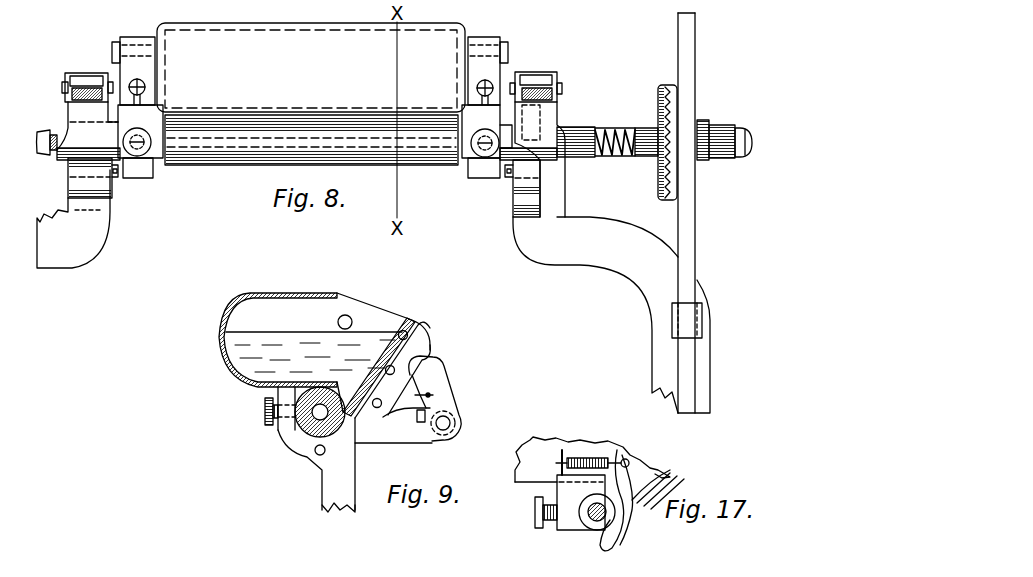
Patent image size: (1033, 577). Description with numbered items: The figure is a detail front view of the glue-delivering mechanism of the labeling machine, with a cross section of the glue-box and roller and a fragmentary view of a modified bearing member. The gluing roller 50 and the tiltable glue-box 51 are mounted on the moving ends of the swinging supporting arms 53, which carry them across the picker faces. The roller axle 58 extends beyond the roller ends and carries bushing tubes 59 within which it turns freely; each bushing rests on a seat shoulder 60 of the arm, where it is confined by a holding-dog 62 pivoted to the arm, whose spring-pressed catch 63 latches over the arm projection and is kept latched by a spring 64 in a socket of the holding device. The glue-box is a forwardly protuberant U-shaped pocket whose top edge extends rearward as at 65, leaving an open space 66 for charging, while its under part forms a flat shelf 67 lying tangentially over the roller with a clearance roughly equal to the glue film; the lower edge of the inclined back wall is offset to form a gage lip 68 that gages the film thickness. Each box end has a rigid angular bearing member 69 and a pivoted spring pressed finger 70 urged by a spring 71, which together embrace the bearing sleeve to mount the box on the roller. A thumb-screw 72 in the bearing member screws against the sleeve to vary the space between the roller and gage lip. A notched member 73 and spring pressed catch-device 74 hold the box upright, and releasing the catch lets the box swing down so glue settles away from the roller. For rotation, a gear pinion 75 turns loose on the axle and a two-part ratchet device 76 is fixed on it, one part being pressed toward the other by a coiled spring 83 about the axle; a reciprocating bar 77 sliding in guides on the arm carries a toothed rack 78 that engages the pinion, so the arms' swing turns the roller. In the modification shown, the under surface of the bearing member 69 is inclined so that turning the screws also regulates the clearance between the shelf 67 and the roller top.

In FIG. 8, the gluing roller 50 is at (262, 133).
In FIG. 9, the gluing roller 50 is at (307, 427).
In FIG. 8, the glue-box 51 is at (311, 67).
In FIG. 9, the glue-box 51 is at (310, 340).
In FIG. 17, the glue-box 51 is at (592, 459).
In FIG. 8, the swinging supporting arms 53 is at (70, 250).
In FIG. 9, the swinging supporting arms 53 is at (338, 519).
In FIG. 8, the roller axle 58 is at (618, 157).
In FIG. 8, the bushing tubes 59 is at (78, 152).
In FIG. 17, the bushing tubes 59 is at (590, 524).
In FIG. 8, the seat shoulder 60 is at (90, 165).
In FIG. 8, the holding-dog 62 is at (95, 115).
In FIG. 9, the holding-dog 62 is at (297, 448).
In FIG. 8, the spring-pressed catch 63 is at (88, 84).
In FIG. 8, the spring 64 is at (72, 95).
In FIG. 9, the rearward top edge extension 65 is at (318, 292).
In FIG. 9, the open space 66 is at (368, 313).
In FIG. 9, the flat shelf 67 is at (337, 382).
In FIG. 9, the gage lip 68 is at (352, 418).
In FIG. 17, the gage lip 68 is at (635, 515).
In FIG. 8, the angular bearing member 69 is at (315, 131).
In FIG. 9, the angular bearing member 69 is at (288, 423).
In FIG. 17, the angular bearing member 69 is at (565, 520).
In FIG. 8, the spring pressed finger 70 is at (133, 172).
In FIG. 17, the spring pressed finger 70 is at (608, 545).
In FIG. 8, the spring 71 is at (130, 80).
In FIG. 8, the thumb-screw 72 is at (145, 150).
In FIG. 9, the thumb-screw 72 is at (265, 410).
In FIG. 17, the thumb-screw 72 is at (535, 513).
In FIG. 9, the notched member 73 is at (417, 352).
In FIG. 9, the spring pressed catch-device 74 is at (422, 367).
In FIG. 8, the gear pinion 75 is at (712, 163).
In FIG. 8, the ratchet device 76 is at (663, 100).
In FIG. 8, the reciprocating bar 77 is at (685, 385).
In FIG. 8, the toothed rack 78 is at (687, 100).
In FIG. 8, the coiled spring 83 is at (615, 137).